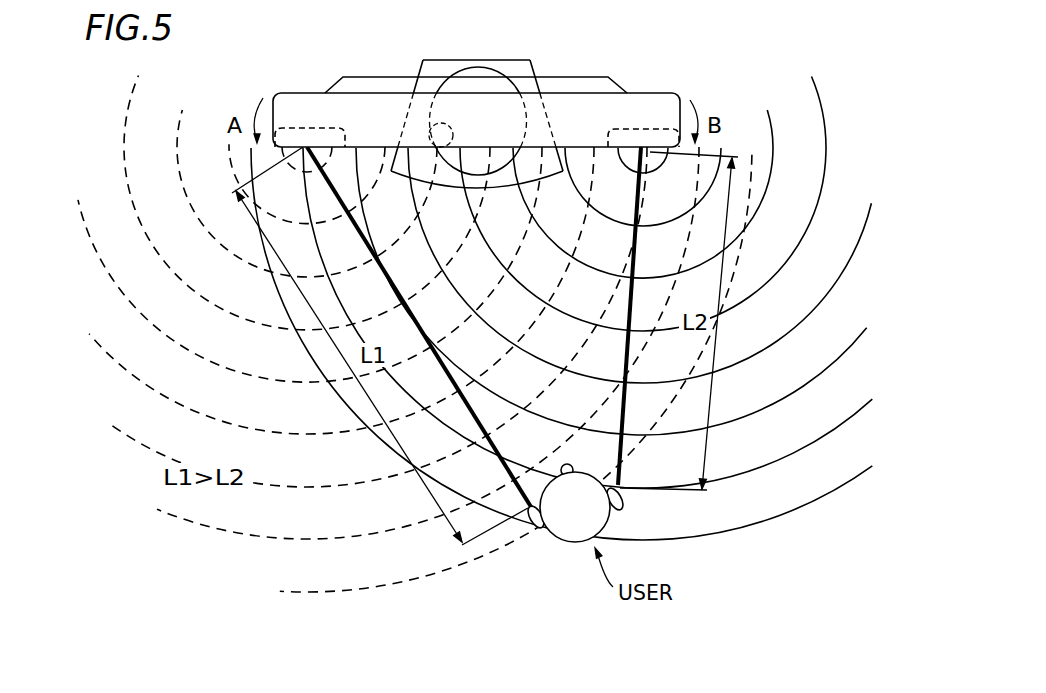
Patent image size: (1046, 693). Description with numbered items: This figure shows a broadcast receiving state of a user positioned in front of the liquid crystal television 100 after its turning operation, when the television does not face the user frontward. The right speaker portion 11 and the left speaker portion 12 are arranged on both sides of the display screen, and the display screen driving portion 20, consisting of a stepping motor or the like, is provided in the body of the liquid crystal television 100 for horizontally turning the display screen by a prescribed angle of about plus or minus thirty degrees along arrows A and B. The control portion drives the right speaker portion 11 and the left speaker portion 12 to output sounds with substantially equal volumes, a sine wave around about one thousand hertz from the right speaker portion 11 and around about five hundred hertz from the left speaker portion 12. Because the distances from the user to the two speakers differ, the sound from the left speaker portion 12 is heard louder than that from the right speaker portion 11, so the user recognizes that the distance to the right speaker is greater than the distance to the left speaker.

The liquid crystal television 100 is at (251, 88).
The right speaker portion 11 is at (300, 128).
The left speaker portion 12 is at (645, 130).
The display screen driving portion 20 is at (440, 123).